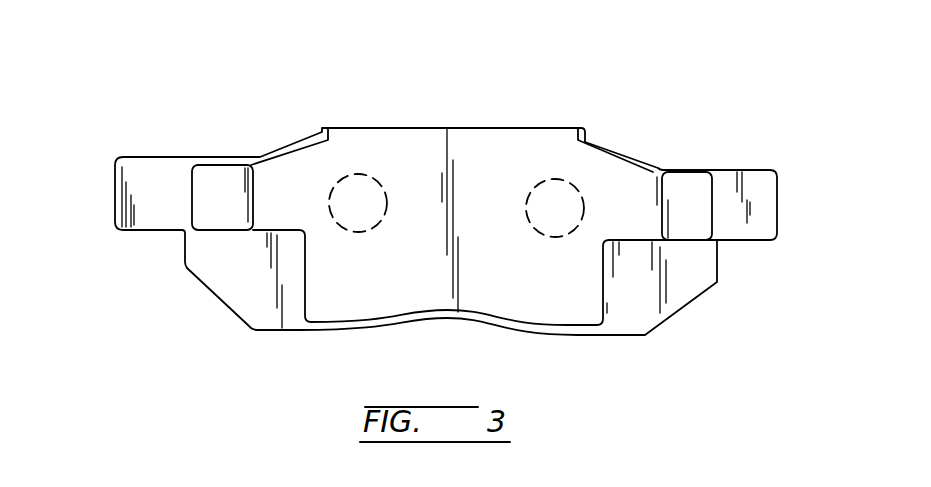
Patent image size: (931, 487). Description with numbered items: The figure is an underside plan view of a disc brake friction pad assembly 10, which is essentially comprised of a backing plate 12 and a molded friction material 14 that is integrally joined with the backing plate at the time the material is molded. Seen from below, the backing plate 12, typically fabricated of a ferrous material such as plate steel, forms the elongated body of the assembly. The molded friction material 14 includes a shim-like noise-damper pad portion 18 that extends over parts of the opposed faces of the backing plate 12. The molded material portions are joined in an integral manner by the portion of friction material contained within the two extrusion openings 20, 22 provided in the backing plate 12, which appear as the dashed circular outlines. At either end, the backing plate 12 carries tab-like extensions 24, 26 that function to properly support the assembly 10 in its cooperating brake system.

The disc brake friction pad assembly 10 is at (268, 138).
The backing plate 12 is at (663, 307).
The molded friction material 14 is at (305, 277).
The shim-like noise-damper pad portion 18 is at (225, 178).
The extrusion opening 20 is at (378, 177).
The extrusion opening 22 is at (553, 178).
The tab-like extension 24 is at (167, 218).
The tab-like extension 26 is at (733, 223).